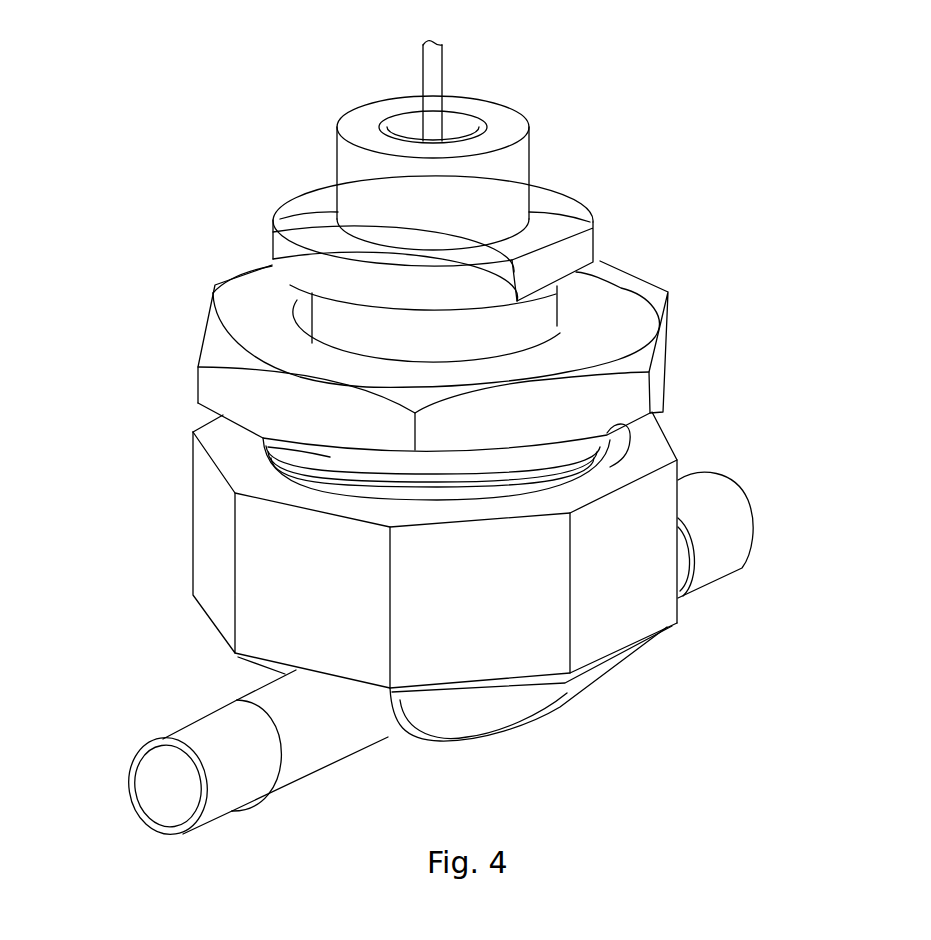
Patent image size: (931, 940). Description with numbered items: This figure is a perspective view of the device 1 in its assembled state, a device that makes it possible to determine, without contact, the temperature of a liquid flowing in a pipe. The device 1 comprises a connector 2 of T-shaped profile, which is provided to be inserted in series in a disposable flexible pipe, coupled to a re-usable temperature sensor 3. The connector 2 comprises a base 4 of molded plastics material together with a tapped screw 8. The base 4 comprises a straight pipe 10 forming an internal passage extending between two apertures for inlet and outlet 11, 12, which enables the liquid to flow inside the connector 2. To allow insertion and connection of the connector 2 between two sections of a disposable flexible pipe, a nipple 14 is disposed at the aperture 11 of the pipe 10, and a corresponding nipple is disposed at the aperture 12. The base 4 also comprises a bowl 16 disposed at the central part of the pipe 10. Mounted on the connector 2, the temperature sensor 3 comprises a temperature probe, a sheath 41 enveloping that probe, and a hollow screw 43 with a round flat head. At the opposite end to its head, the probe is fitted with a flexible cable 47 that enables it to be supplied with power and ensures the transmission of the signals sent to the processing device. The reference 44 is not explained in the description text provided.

The device 1 is at (590, 64).
The connector 2 is at (782, 525).
The temperature sensor 3 is at (556, 128).
The base 4 is at (659, 656).
The tapped screw 8 is at (636, 391).
The straight pipe 10 is at (323, 752).
The inlet/outlet aperture 11 is at (122, 818).
The inlet/outlet aperture 12 is at (751, 491).
The nipple 14 is at (223, 810).
The bowl 16 is at (207, 547).
The sheath 41 is at (522, 167).
The hollow screw 43 is at (547, 318).
The connection end face 44 is at (718, 563).
The flexible cable 47 is at (436, 71).